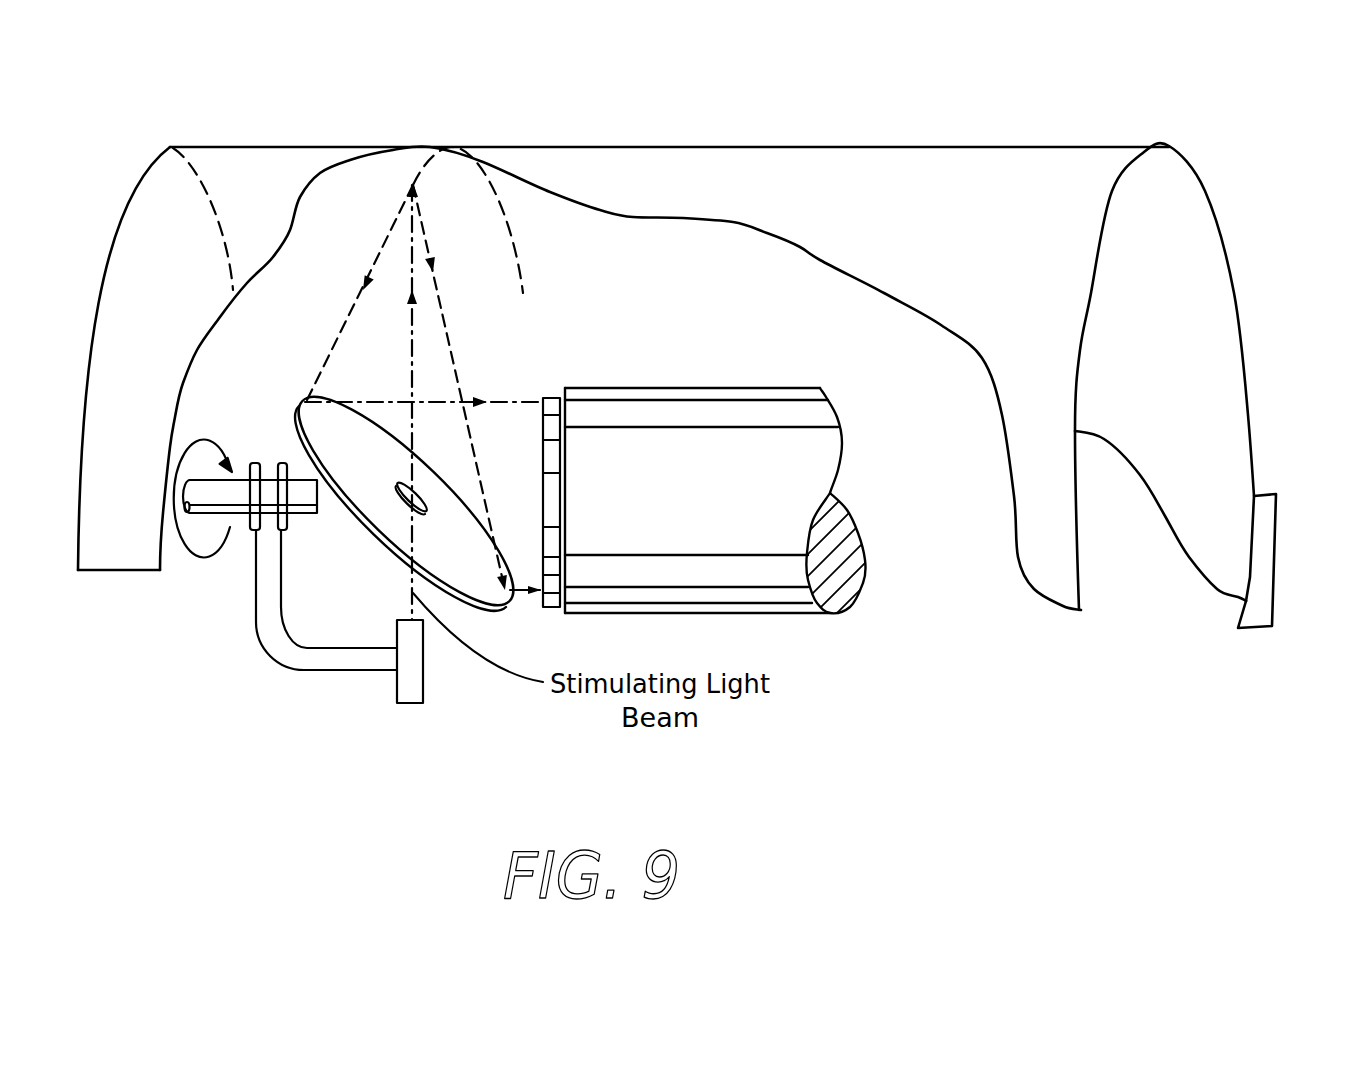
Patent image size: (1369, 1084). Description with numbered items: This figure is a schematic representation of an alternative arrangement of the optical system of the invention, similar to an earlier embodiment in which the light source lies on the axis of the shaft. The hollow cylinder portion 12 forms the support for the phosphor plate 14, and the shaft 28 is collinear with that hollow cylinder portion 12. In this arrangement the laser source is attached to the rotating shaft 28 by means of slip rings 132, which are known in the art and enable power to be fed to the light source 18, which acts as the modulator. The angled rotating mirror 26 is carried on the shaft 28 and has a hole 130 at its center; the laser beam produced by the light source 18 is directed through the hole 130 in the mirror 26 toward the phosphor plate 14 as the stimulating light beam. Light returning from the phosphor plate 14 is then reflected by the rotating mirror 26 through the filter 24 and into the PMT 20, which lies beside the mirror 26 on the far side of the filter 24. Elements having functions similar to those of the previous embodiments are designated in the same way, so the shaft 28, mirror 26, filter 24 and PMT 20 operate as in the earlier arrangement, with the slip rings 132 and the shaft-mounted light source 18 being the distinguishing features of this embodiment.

The hollow cylinder portion 12 is at (1276, 494).
The phosphor plate 14 is at (760, 148).
The light source 18 is at (423, 700).
The PMT 20 is at (822, 393).
The filter 24 is at (550, 398).
The rotating mirror 26 is at (313, 390).
The shaft 28 is at (300, 516).
The hole 130 is at (404, 483).
The slip rings 132 is at (279, 463).